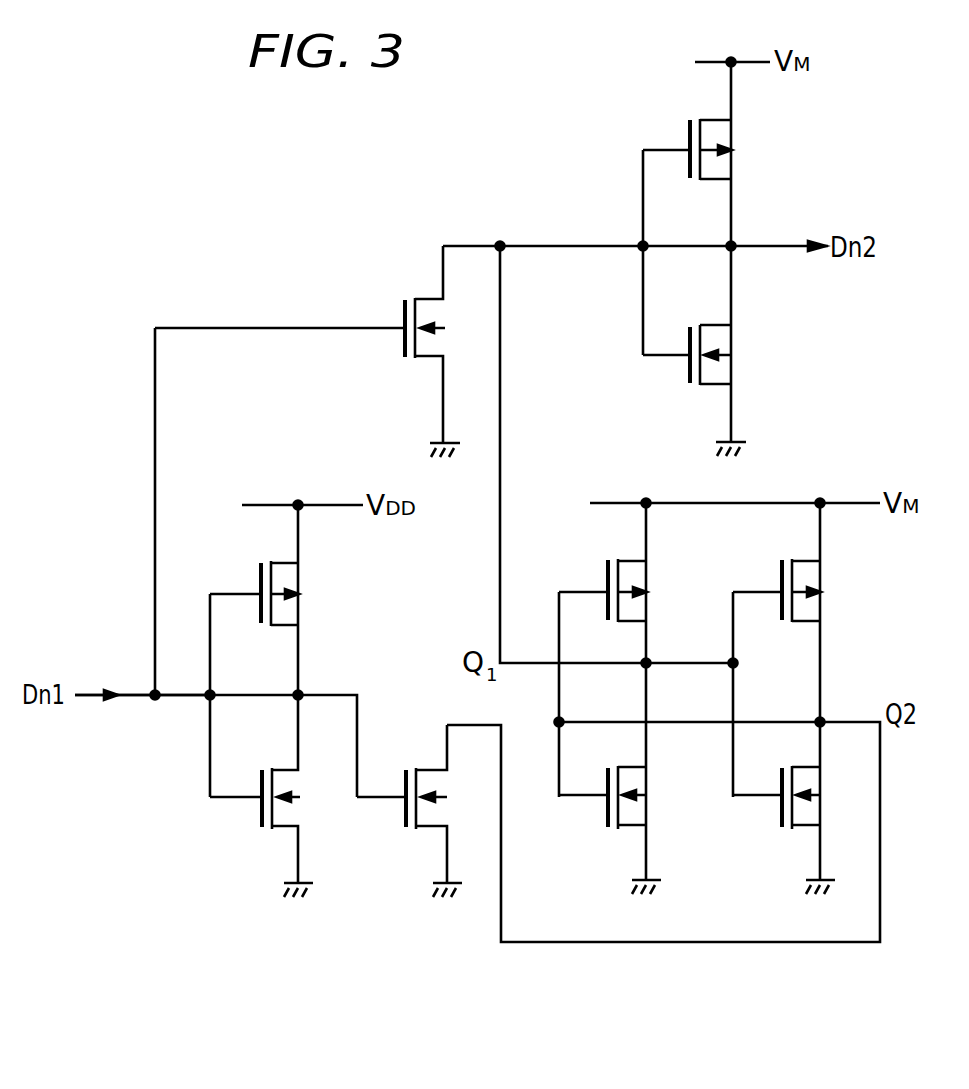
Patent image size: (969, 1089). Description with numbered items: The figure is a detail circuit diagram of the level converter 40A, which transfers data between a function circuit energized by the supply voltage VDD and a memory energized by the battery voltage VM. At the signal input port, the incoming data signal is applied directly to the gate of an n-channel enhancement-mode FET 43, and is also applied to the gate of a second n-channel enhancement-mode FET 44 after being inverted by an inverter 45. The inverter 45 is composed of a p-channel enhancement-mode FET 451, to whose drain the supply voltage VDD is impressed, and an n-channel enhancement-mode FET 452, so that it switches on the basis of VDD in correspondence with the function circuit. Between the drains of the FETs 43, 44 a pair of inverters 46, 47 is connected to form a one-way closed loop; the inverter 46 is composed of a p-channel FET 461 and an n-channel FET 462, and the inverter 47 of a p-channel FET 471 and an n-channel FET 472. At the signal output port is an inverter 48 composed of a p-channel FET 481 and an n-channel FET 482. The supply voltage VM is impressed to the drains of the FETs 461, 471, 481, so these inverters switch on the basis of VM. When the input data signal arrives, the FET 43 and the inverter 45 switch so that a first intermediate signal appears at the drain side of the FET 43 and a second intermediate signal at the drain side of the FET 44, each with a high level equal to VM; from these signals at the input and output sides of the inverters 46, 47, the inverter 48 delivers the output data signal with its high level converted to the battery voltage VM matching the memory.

The level converter 40A is at (263, 1021).
The n-channel enhancement-mode MOSFET 43 is at (402, 358).
The n-channel enhancement-mode MOSFET 44 is at (403, 820).
The inverter 45 is at (268, 710).
The p-channel enhancement-mode FET 451 is at (258, 575).
The n-channel enhancement-mode FET 452 is at (259, 820).
The inverter 46 is at (618, 708).
The p-channel enhancement-mode FET 461 is at (605, 575).
The n-channel enhancement-mode FET 462 is at (605, 820).
The inverter 47 is at (793, 708).
The p-channel enhancement-mode FET 471 is at (779, 575).
The n-channel enhancement-mode FET 472 is at (779, 820).
The inverter 48 is at (703, 264).
The p-channel enhancement-mode FET 481 is at (688, 132).
The n-channel enhancement-mode FET 482 is at (688, 381).